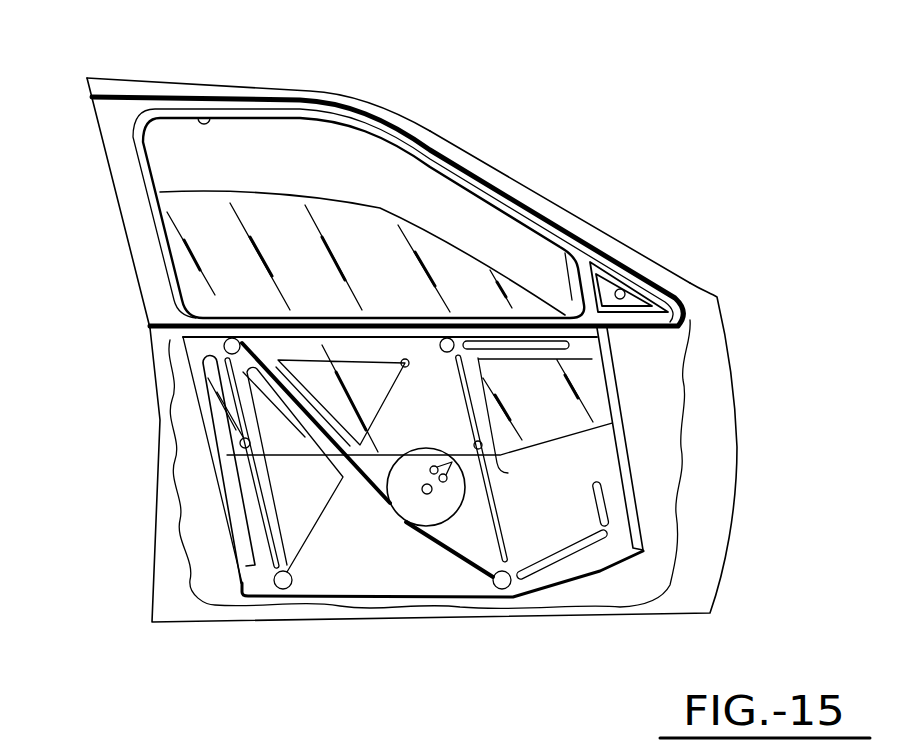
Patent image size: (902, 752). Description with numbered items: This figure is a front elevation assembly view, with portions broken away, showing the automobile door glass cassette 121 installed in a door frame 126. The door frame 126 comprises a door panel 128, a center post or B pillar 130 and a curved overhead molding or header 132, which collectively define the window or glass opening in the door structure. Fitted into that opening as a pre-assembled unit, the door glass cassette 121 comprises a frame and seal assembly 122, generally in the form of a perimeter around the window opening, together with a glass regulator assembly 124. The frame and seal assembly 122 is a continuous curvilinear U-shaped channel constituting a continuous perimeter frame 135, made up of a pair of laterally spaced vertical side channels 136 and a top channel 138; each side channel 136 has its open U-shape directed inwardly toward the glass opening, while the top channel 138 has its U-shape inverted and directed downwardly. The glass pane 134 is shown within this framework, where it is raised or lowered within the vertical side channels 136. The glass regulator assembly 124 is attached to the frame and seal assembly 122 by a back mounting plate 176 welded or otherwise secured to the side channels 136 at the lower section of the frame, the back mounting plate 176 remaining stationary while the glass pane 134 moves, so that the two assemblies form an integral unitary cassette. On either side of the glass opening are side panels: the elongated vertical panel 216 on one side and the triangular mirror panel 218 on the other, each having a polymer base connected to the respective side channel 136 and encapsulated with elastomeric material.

The door glass cassette 121 is at (399, 126).
The frame and seal assembly 122 is at (450, 148).
The glass regulator assembly 124 is at (411, 542).
The door frame 126 is at (382, 108).
The door panel 128 is at (713, 320).
The center post 130 is at (120, 213).
The header 132 is at (510, 175).
The glass pane 134 is at (252, 196).
The perimeter frame 135 is at (198, 116).
The side channel 136 is at (213, 438).
The top channel 138 is at (290, 103).
The back mounting plate 176 is at (343, 585).
The vertical panel 216 is at (123, 164).
The mirror panel 218 is at (623, 289).